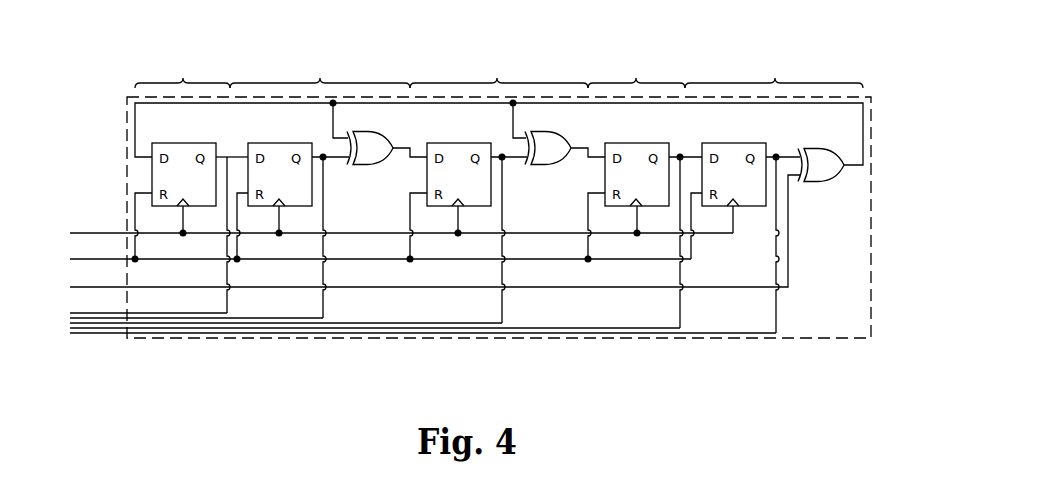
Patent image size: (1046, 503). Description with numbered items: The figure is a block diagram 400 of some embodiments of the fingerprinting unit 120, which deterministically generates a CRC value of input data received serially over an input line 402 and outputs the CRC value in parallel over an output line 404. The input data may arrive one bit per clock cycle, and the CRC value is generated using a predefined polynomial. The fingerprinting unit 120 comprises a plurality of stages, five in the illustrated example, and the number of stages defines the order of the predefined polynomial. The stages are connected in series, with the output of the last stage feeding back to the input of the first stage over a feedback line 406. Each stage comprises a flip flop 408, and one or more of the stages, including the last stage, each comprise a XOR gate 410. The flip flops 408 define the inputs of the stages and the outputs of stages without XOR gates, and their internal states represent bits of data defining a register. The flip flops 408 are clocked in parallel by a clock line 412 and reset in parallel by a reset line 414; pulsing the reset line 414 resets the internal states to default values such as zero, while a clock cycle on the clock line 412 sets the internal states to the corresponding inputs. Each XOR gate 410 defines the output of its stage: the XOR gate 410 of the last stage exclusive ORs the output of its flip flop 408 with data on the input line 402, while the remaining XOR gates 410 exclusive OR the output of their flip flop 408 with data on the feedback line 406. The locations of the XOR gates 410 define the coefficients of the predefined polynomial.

The block diagram 400 is at (874, 38).
The fingerprinting unit 120 is at (455, 339).
The input line 402 is at (275, 288).
The output line 404 is at (177, 335).
The feedback line 406 is at (548, 103).
The flip flop 408 is at (280, 147).
The XOR gate 410 is at (367, 132).
The clock line 412 is at (363, 234).
The reset line 414 is at (545, 260).